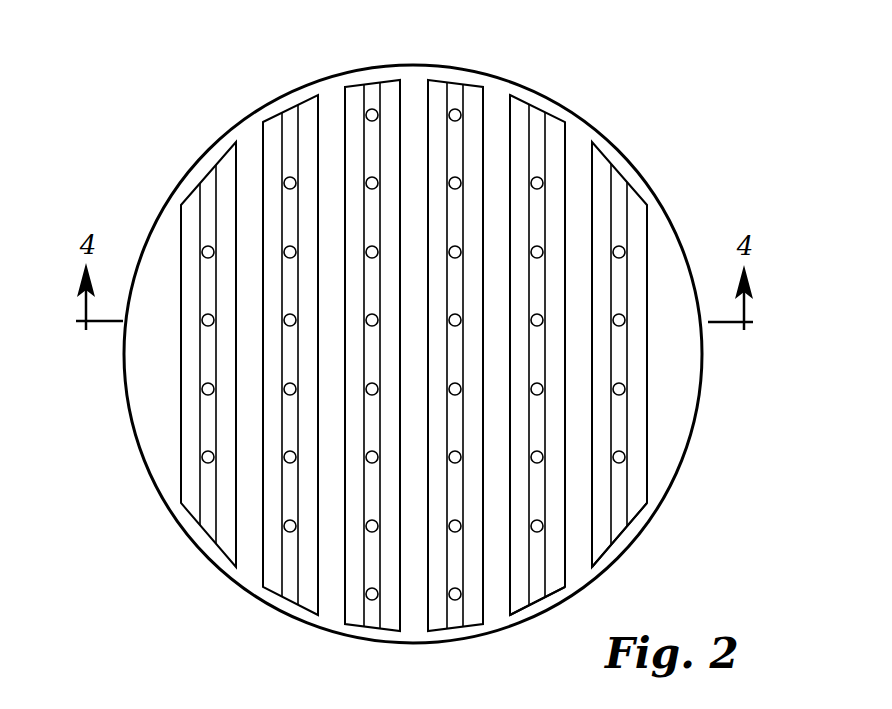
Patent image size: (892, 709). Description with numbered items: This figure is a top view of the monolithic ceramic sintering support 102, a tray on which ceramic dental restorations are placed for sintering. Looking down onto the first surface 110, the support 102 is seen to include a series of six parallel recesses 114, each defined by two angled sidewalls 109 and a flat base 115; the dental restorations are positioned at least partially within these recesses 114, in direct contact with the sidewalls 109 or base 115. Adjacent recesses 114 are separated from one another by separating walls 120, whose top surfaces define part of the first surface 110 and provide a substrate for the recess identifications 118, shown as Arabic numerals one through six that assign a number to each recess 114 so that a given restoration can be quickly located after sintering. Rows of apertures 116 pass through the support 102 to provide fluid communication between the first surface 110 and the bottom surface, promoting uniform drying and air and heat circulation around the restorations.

The sintering support 102 is at (616, 115).
The sidewalls 109 is at (189, 505).
The first surface 110 is at (657, 364).
The recesses 114 is at (377, 80).
The base 115 is at (292, 578).
The apertures 116 is at (624, 389).
The recess identifications 118 is at (258, 157).
The separating wall 120 is at (573, 553).